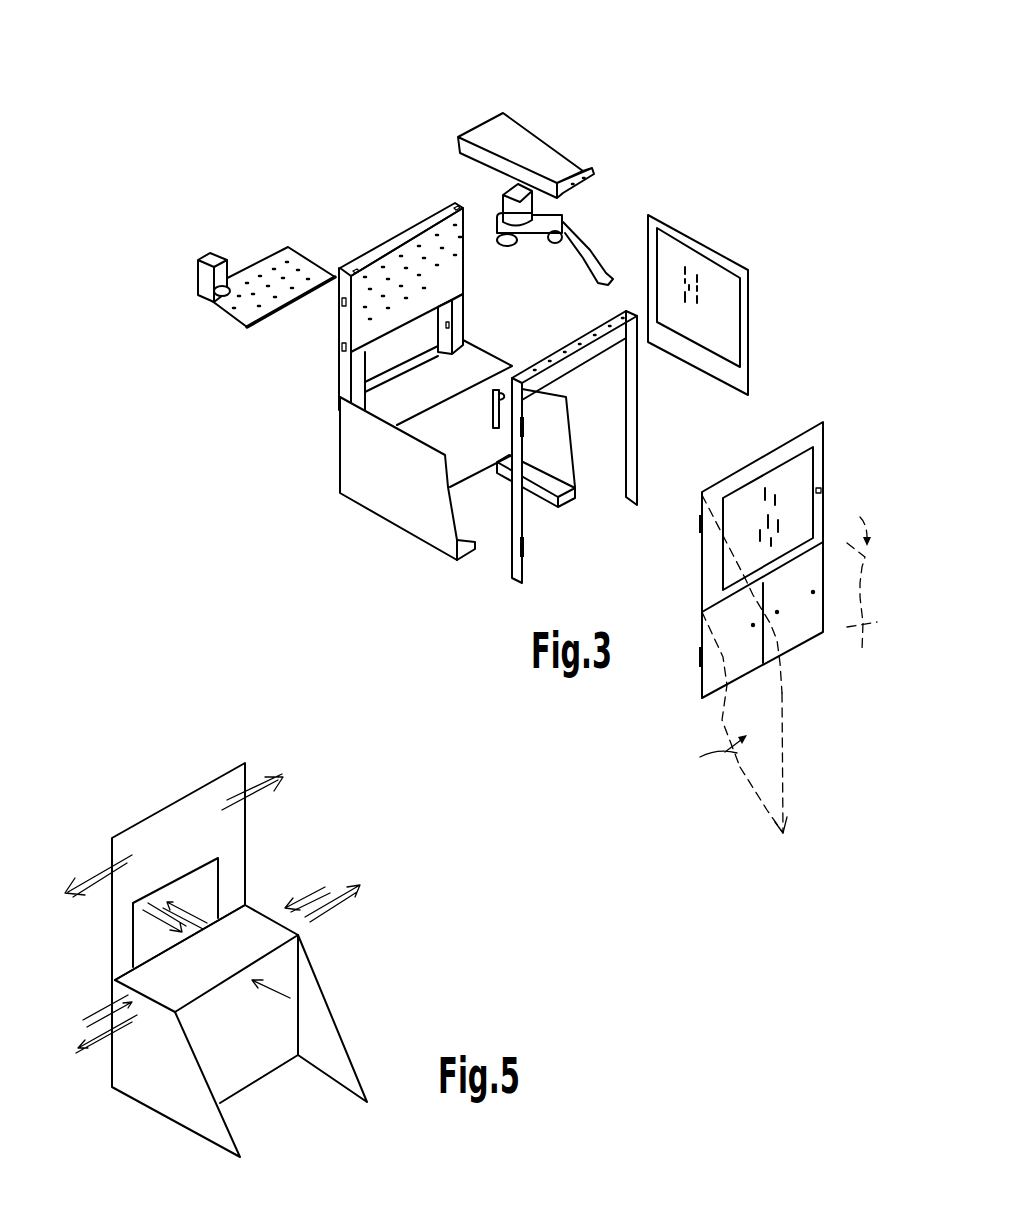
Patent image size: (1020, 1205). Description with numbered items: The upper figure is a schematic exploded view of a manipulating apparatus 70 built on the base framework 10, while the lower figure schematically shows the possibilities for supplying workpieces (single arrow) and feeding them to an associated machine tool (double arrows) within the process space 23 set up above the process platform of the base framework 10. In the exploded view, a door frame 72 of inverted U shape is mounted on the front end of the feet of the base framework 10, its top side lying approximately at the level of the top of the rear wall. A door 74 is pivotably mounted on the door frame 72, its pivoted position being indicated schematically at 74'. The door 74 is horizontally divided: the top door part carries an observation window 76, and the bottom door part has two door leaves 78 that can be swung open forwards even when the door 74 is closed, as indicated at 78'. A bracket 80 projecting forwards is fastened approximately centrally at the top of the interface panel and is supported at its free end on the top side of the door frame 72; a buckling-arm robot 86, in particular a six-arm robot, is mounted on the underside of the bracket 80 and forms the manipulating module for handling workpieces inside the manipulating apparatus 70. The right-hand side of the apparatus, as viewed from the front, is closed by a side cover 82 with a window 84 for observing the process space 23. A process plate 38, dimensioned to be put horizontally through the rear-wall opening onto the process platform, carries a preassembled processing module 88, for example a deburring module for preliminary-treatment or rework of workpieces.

In FIG. 3, the base framework 10 is at (400, 223).
In FIG. 5, the base framework 10 is at (338, 832).
In FIG. 5, the process space 23 is at (231, 973).
In FIG. 3, the process plate 38 is at (275, 248).
In FIG. 3, the manipulating apparatus 70 is at (754, 210).
In FIG. 3, the door frame 72 is at (512, 567).
In FIG. 3, the door 74 is at (804, 543).
In FIG. 3, the door in pivoted position 74' is at (739, 786).
In FIG. 3, the observation window 76 is at (800, 478).
In FIG. 3, the door leaves 78 is at (813, 668).
In FIG. 3, the door leaves in opened position 78' is at (769, 633).
In FIG. 3, the bracket 80 is at (528, 127).
In FIG. 3, the side cover 82 is at (748, 268).
In FIG. 3, the window 84 is at (767, 292).
In FIG. 3, the buckling-arm robot 86 is at (587, 247).
In FIG. 3, the processing module 88 is at (210, 253).